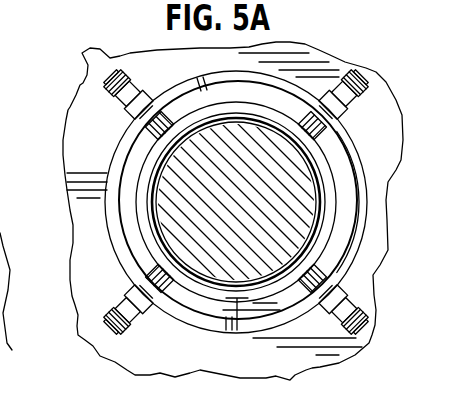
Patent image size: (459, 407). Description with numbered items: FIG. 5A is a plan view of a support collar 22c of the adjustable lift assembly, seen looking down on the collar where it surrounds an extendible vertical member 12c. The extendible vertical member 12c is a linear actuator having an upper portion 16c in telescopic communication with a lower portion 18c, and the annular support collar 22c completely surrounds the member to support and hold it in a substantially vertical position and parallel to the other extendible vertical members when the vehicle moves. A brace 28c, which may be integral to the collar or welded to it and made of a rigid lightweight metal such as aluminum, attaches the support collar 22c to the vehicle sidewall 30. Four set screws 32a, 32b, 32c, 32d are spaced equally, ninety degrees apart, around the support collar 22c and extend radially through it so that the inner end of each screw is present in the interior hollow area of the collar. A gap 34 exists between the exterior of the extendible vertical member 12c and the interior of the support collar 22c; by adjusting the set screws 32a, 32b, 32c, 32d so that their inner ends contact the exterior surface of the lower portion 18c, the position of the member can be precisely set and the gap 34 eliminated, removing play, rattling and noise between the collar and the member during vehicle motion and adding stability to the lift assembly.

The extendible vertical member 12c is at (257, 97).
The upper portion 16c is at (213, 280).
The lower portion 18c is at (266, 115).
The support collar 22c is at (118, 160).
The brace 28c is at (83, 118).
The vehicle sidewall 30 is at (15, 306).
The set screw 32a is at (115, 331).
The set screw 32b is at (354, 315).
The set screw 32c is at (369, 72).
The set screw 32d is at (118, 80).
The gap 34 is at (238, 320).